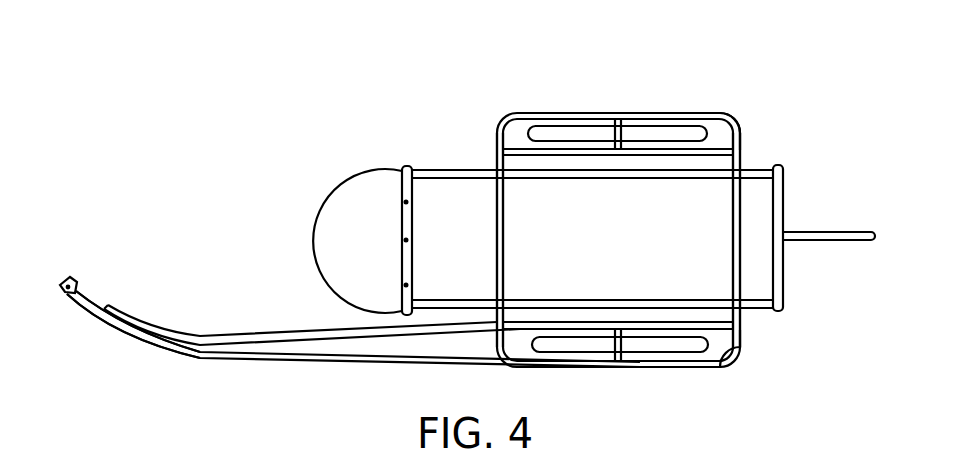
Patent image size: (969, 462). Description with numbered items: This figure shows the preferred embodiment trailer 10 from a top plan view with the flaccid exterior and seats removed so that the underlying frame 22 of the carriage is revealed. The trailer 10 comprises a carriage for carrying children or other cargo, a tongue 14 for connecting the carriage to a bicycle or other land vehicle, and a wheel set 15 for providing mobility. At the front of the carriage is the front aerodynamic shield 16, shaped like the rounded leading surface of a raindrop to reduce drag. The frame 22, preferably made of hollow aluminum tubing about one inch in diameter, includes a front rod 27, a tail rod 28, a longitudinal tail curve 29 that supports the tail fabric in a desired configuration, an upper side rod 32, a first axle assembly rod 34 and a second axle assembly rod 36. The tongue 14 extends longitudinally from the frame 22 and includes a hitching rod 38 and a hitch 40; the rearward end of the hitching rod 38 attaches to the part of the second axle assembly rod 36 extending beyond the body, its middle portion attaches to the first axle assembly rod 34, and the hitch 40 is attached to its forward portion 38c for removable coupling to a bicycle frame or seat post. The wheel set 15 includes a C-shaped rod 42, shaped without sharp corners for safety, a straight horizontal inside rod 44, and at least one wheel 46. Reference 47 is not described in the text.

The trailer 10 is at (243, 63).
The tongue 14 is at (371, 373).
The wheel set 15 is at (613, 110).
The front aerodynamic shield 16 is at (342, 232).
The frame 22 is at (672, 110).
The front rod 27 is at (410, 222).
The tail rod 28 is at (780, 272).
The longitudinal tail curve 29 is at (807, 237).
The upper side rod 32 is at (500, 172).
The first axle assembly rod 34 is at (507, 217).
The second axle assembly rod 36 is at (733, 248).
The hitching rod 38 is at (95, 318).
The forward portion of hitching rod 38c is at (85, 295).
The hitch 40 is at (78, 282).
The C-shaped rod 42 is at (727, 115).
The inside rod 44 is at (730, 148).
The wheel 46 is at (743, 342).
The upper slot 47 is at (668, 135).